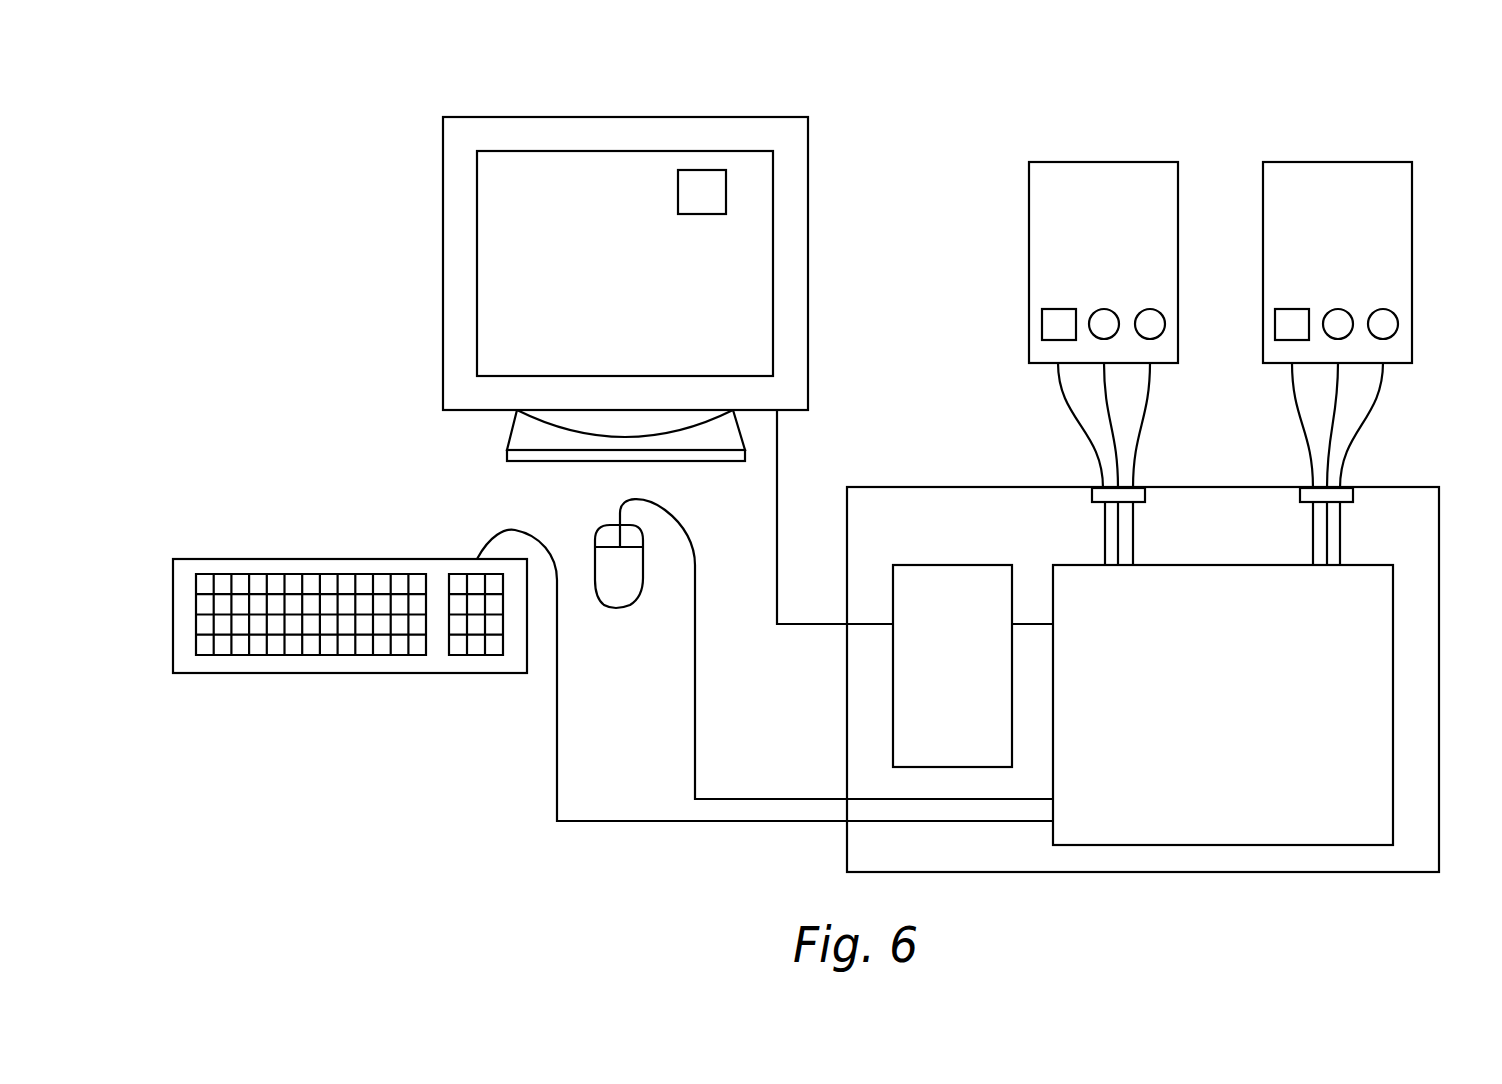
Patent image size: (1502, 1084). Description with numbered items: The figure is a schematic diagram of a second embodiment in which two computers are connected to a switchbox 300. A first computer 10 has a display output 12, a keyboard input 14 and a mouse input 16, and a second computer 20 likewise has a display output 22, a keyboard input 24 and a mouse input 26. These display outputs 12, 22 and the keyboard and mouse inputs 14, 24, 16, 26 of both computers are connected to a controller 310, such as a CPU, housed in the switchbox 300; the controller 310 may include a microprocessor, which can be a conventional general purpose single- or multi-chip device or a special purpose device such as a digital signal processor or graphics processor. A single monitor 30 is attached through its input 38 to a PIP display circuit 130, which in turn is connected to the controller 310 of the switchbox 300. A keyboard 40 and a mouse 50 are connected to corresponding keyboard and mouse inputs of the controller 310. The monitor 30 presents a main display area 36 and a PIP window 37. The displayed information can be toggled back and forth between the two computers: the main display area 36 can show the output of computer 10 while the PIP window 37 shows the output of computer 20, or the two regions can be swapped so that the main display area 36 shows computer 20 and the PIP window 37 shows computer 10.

The computer 10 is at (1178, 162).
The display output 12 is at (1042, 322).
The keyboard input 14 is at (1100, 309).
The mouse input 16 is at (1150, 309).
The computer 20 is at (1412, 162).
The display output 22 is at (1276, 312).
The keyboard input 24 is at (1340, 309).
The mouse input 26 is at (1398, 322).
The monitor 30 is at (506, 133).
The main display area 36 is at (625, 263).
The PIP window 37 is at (702, 192).
The input 38 is at (778, 468).
The keyboard 40 is at (200, 559).
The mouse 50 is at (618, 607).
The PIP display circuit 130 is at (953, 565).
The switchbox 300 is at (1403, 487).
The controller 310 is at (1393, 727).